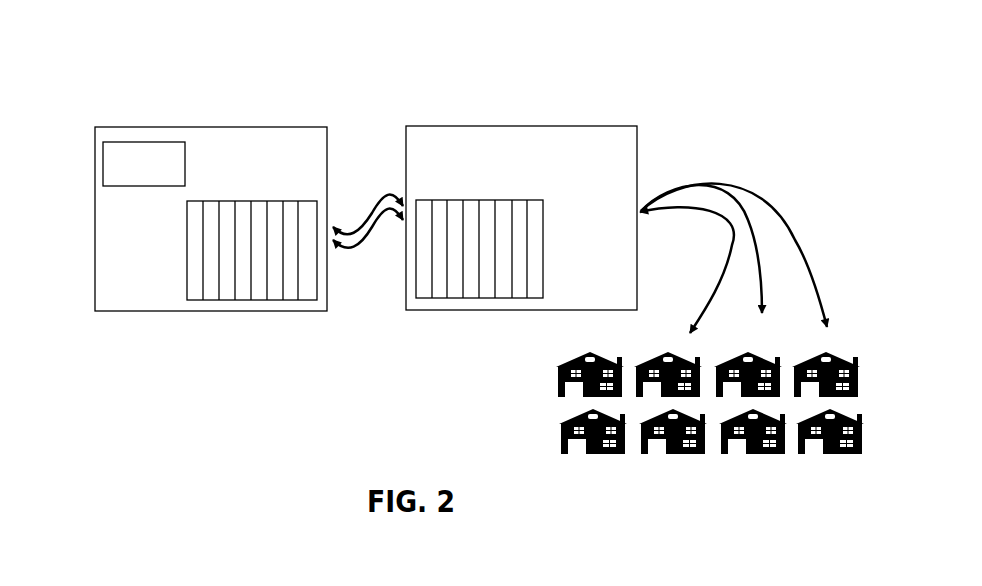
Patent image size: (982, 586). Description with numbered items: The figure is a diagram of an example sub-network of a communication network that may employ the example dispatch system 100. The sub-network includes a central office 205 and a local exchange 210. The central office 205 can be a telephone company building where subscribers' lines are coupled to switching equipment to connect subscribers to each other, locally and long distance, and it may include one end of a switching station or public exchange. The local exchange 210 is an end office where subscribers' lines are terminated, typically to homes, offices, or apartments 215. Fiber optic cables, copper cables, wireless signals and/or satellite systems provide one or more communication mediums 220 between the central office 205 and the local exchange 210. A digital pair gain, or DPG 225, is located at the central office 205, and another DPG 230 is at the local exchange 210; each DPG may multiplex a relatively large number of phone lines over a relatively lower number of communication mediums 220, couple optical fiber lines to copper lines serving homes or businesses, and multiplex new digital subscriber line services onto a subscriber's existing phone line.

The dispatch system 100 is at (103, 163).
The central office 205 is at (288, 127).
The local exchange 210 is at (583, 126).
The homes, offices, or apartments 215 is at (777, 463).
The communication mediums 220 is at (368, 258).
The digital pair gain (DPG) 225 is at (187, 270).
The digital pair gain (DPG) 230 is at (552, 282).